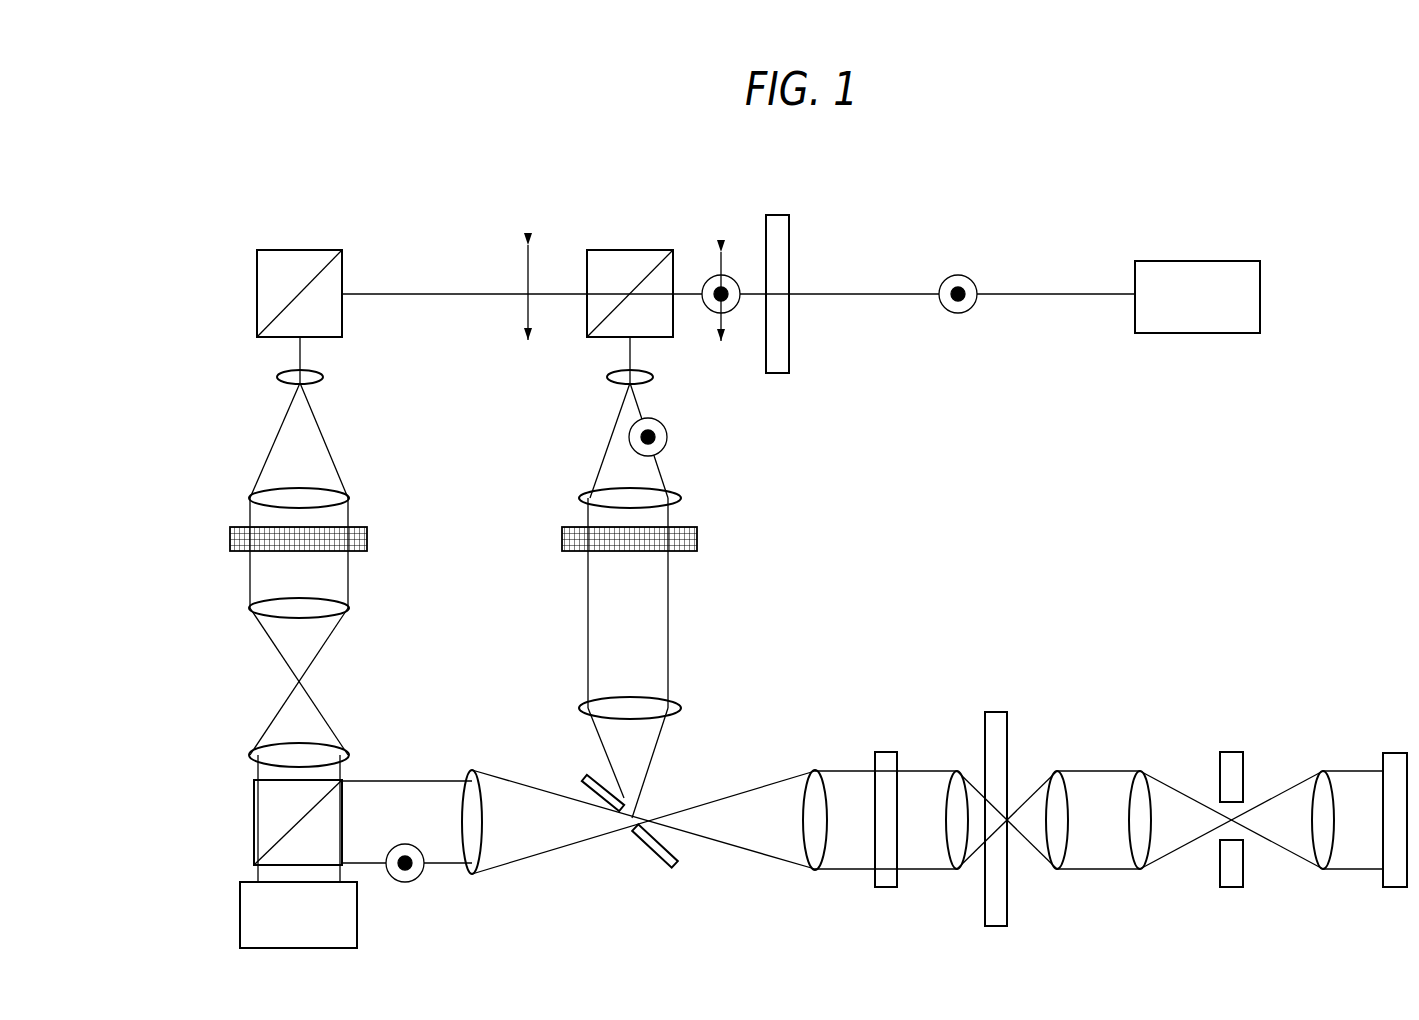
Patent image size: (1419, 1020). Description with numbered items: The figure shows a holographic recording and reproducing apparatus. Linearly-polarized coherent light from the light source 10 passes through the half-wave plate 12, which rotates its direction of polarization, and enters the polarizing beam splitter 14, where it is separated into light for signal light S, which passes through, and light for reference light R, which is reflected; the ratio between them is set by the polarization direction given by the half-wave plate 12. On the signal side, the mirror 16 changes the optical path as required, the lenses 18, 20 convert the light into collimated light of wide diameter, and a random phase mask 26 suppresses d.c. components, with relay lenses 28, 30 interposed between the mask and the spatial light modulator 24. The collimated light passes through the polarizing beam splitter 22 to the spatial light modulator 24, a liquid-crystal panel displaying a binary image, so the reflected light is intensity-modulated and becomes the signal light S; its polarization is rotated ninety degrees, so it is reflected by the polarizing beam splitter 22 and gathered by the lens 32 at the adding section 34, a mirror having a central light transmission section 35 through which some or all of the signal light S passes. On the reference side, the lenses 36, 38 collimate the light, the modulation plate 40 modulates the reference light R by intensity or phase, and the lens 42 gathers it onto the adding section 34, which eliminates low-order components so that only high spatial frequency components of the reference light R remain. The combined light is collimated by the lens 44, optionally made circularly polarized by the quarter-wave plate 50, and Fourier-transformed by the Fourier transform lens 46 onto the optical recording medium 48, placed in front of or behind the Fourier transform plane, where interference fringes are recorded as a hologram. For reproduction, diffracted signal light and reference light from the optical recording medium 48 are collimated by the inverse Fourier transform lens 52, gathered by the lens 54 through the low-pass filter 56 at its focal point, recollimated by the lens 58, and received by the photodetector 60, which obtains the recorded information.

The light source 10 is at (1197, 261).
The λ/2 plate 12 is at (777, 215).
The polarizing beam splitter 14 is at (630, 250).
The mirror 16 is at (300, 250).
The lens 18 is at (276, 377).
The lens 20 is at (250, 497).
The polarizing beam splitter 22 is at (254, 820).
The spatial light modulator 24 is at (240, 915).
The random phase mask 26 is at (230, 539).
The relay lens 28 is at (250, 608).
The relay lens 30 is at (250, 755).
The lens 32 is at (472, 770).
The adding section 34 is at (675, 867).
The light transmission section 35 is at (630, 828).
The lens 36 is at (605, 377).
The lens 38 is at (579, 498).
The modulation plate 40 is at (562, 539).
The lens 42 is at (579, 708).
The lens 44 is at (815, 770).
The Fourier transform lens 46 is at (957, 771).
The optical recording medium 48 is at (996, 712).
The λ/4 plate 50 is at (885, 752).
The inverse Fourier transform lens 52 is at (1057, 771).
The lens 54 is at (1140, 771).
The low-pass filter 56 is at (1232, 752).
The lens 58 is at (1323, 771).
The photodetector 60 is at (1395, 753).
The signal light S is at (407, 781).
The reference light R is at (668, 620).